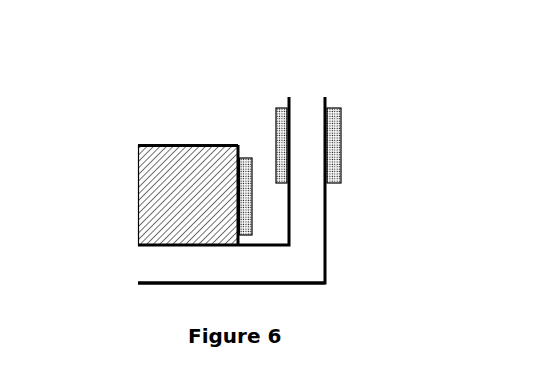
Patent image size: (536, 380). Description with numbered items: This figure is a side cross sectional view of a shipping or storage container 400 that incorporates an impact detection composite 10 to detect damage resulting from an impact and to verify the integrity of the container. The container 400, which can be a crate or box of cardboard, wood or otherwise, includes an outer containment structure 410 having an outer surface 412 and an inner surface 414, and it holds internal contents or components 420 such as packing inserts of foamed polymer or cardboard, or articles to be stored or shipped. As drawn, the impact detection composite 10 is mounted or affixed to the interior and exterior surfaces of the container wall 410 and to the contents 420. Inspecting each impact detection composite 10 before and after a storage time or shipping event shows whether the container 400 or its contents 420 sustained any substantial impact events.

The shipping or storage container 400 is at (152, 83).
The impact detection composite 10 is at (250, 158).
The internal contents or components 420 is at (150, 195).
The outer containment structure 410 is at (150, 272).
The inner surface 414 is at (290, 195).
The outer surface 412 is at (327, 245).